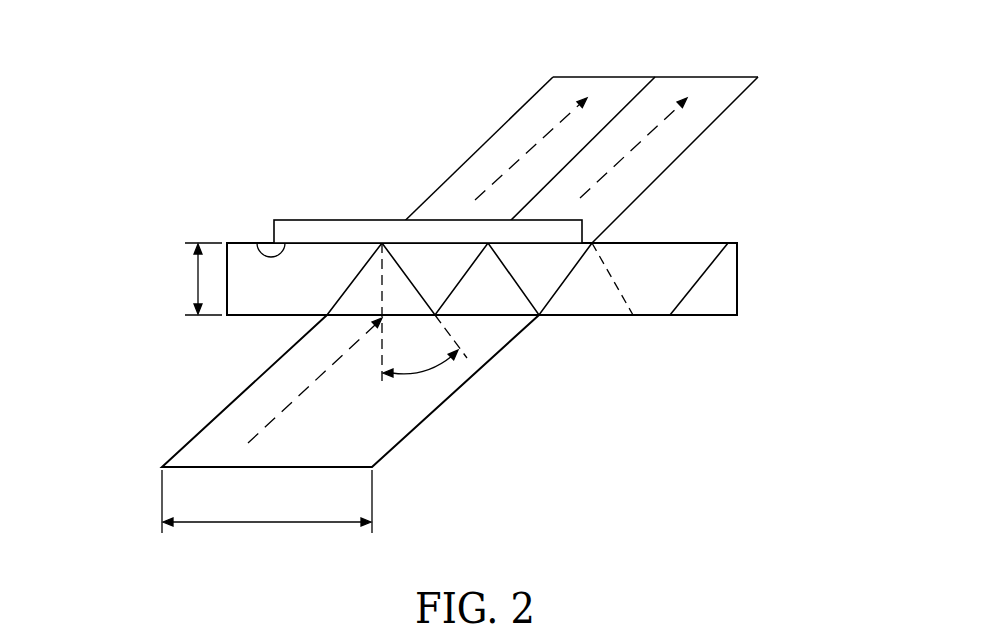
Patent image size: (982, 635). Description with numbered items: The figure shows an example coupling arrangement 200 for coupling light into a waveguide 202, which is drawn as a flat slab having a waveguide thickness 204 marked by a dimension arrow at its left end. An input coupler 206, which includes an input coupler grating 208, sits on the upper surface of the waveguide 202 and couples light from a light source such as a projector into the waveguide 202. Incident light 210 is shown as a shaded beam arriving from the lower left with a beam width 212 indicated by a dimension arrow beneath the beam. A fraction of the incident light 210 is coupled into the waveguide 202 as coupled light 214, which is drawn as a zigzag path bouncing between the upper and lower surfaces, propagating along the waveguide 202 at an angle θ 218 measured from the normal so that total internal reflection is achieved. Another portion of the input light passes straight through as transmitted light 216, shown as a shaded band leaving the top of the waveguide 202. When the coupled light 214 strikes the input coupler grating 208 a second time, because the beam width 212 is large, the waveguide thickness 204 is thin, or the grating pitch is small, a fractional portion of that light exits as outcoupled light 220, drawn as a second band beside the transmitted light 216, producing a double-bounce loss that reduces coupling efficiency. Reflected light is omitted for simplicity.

The coupling arrangement 200 is at (170, 62).
The waveguide 202 is at (748, 278).
The waveguide thickness 204 is at (196, 278).
The input coupler 206 is at (357, 228).
The input coupler grating 208 is at (257, 243).
The incident light 210 is at (298, 393).
The beam width 212 is at (263, 523).
The coupled light 214 is at (636, 331).
The transmitted light 216 is at (523, 153).
The angle θ 218 is at (432, 367).
The outcoupled light 220 is at (631, 156).